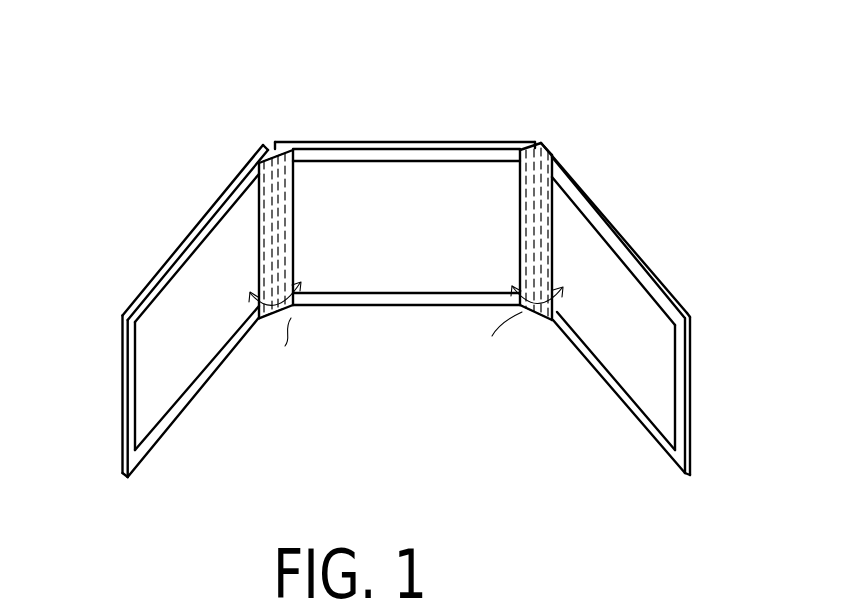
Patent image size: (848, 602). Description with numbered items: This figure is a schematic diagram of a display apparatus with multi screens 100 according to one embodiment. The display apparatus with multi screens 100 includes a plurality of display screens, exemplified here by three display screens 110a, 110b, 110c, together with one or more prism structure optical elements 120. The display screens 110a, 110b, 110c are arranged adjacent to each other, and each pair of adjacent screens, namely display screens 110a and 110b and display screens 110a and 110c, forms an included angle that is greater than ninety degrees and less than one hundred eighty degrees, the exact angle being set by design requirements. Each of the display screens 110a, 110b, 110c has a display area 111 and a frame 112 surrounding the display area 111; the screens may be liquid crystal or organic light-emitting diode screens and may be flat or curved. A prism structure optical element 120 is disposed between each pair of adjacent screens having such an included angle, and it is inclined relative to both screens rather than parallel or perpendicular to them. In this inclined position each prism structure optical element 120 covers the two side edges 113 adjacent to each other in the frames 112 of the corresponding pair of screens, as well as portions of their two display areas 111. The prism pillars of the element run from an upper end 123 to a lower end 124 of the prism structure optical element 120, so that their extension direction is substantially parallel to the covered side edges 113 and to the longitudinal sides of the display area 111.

The display apparatus with multi screens 100 is at (94, 36).
The display screen 110a is at (398, 140).
The display screen 110b is at (144, 305).
The display screen 110c is at (664, 242).
The display area 111 is at (170, 378).
The frame 112 is at (135, 370).
The side edges 113 is at (258, 188).
The prism structure optical element 120 is at (559, 229).
The upper end 123 is at (541, 146).
The lower end 124 is at (537, 318).